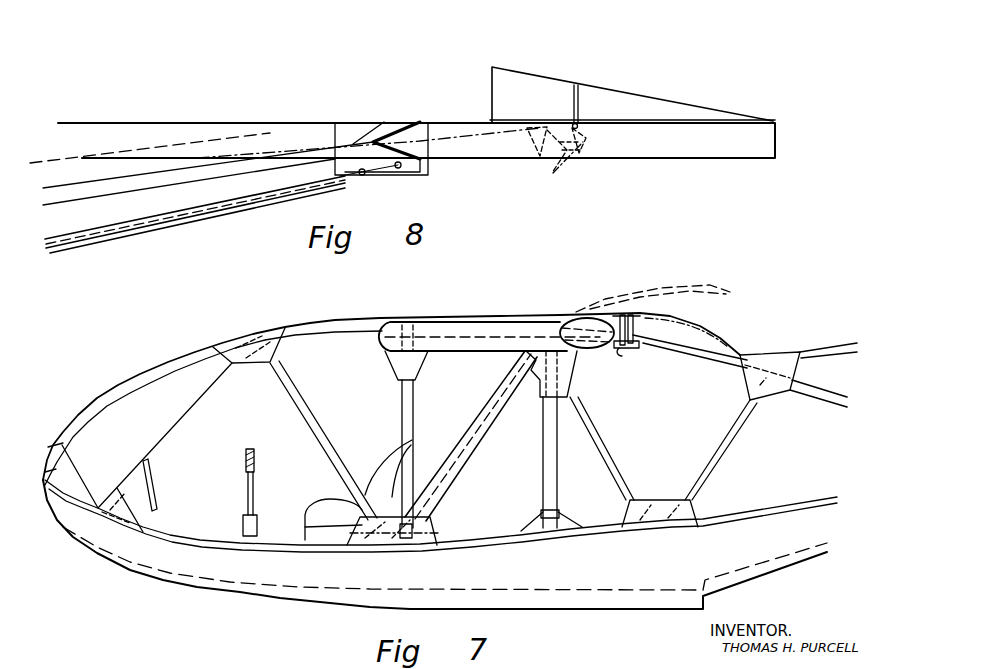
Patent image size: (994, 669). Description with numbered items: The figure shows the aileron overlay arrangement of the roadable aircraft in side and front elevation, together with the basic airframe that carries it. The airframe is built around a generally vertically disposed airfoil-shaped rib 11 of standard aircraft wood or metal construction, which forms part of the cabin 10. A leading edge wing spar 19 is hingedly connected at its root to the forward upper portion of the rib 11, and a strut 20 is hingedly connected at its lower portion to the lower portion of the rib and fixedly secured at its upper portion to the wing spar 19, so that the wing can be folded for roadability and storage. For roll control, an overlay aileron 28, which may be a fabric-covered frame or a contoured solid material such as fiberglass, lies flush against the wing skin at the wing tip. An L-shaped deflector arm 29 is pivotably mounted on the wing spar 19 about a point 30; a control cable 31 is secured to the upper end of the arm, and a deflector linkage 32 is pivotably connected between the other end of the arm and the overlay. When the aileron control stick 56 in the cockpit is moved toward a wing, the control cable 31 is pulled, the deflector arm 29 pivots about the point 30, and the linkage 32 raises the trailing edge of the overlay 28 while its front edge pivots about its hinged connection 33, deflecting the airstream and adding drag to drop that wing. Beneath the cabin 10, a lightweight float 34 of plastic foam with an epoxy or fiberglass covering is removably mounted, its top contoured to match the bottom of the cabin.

In FIG. 7, the cabin 10 is at (175, 313).
In FIG. 7, the airfoil-shaped rib 11 is at (338, 288).
In FIG. 8, the leading edge wing spar 19 is at (167, 136).
In FIG. 7, the leading edge wing spar 19 is at (454, 336).
In FIG. 8, the strut 20 is at (200, 214).
In FIG. 7, the strut 20 is at (474, 443).
In FIG. 8, the overlay aileron 28 is at (522, 122).
In FIG. 7, the overlay aileron 28 is at (677, 320).
In FIG. 8, the L-shaped deflector arm 29 is at (562, 158).
In FIG. 7, the L-shaped deflector arm 29 is at (632, 348).
In FIG. 8, the pivot point 30 is at (537, 158).
In FIG. 8, the control cable 31 is at (462, 150).
In FIG. 8, the deflector linkage 32 is at (580, 140).
In FIG. 7, the deflector linkage 32 is at (640, 336).
In FIG. 7, the hinged connection 33 is at (580, 314).
In FIG. 7, the lightweight float 34 is at (234, 572).
In FIG. 7, the aileron control stick 56 is at (244, 484).